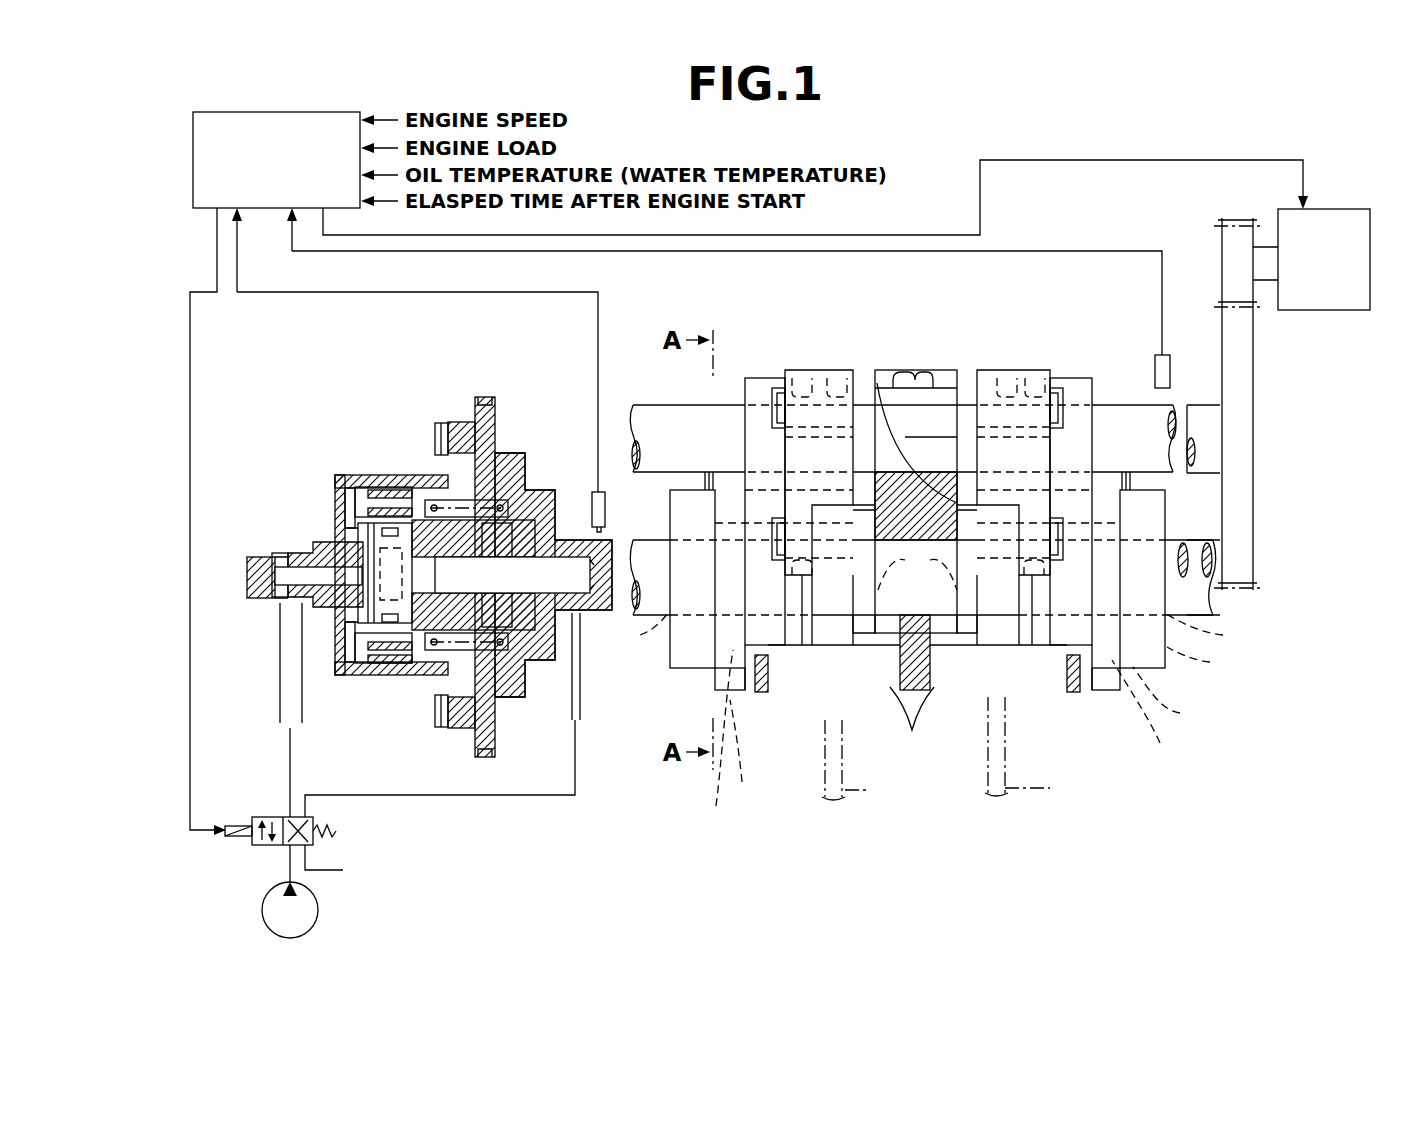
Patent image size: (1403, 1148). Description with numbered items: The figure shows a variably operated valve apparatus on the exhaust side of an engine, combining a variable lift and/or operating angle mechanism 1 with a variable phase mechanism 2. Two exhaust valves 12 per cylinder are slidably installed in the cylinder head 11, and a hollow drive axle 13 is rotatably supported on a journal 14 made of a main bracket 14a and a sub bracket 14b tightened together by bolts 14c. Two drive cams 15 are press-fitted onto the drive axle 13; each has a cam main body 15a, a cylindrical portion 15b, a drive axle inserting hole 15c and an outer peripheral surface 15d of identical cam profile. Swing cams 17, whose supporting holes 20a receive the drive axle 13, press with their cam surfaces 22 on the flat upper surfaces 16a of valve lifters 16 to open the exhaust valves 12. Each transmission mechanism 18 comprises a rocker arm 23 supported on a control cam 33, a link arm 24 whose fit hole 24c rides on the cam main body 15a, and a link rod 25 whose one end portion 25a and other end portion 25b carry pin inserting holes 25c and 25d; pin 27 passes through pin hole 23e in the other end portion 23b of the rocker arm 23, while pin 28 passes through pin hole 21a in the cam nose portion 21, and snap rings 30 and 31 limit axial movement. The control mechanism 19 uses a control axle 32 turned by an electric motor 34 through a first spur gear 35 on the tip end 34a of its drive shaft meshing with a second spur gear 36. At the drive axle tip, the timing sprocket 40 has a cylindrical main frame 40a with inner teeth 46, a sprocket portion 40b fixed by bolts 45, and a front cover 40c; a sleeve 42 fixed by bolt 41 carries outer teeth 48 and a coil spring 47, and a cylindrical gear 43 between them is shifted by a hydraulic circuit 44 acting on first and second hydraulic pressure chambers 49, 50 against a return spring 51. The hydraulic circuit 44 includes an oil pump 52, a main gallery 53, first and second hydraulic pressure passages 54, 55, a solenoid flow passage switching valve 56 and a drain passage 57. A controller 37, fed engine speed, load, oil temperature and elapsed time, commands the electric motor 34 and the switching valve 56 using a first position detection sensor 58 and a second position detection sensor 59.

The variable lift and/or operating angle mechanism 1 is at (1096, 772).
The variable phase mechanism 2 is at (414, 625).
The cylinder head 11 is at (758, 693).
The exhaust valve 12 is at (868, 790).
The drive axle 13 is at (603, 525).
The journal 14 is at (939, 362).
The main bracket 14a is at (933, 450).
The sub bracket 14b is at (880, 390).
The bolt 14c is at (918, 372).
The drive cam 15 is at (660, 672).
The cam main body 15a is at (968, 741).
The cylindrical portion 15b is at (667, 645).
The drive axle inserting hole 15c is at (929, 630).
The outer peripheral surface 15d is at (951, 735).
The valve lifter 16 is at (923, 650).
The flat upper surface 16a is at (745, 608).
The swing cam 17 is at (864, 643).
The transmission mechanism 18 is at (814, 362).
The control mechanism 19 is at (680, 392).
The supporting hole 20a is at (803, 610).
The cam nose portion 21 is at (838, 585).
The pin hole 21a is at (917, 571).
The cam surface 22 is at (856, 635).
The rocker arm 23 is at (810, 370).
The other end portion 23b is at (838, 372).
The pin hole 23e is at (832, 372).
The link arm 24 is at (715, 675).
The fit hole 24c is at (717, 668).
The link rod 25 is at (785, 450).
The one end portion 25a is at (787, 372).
The other end portion 25b is at (806, 590).
The pin inserting hole 25c is at (793, 377).
The pin inserting hole 25d is at (800, 573).
The pin 27 is at (776, 395).
The pin 28 is at (772, 528).
The snap ring 30 is at (772, 412).
The snap ring 31 is at (772, 548).
The control axle 32 is at (647, 413).
The control cam 33 is at (845, 455).
The electric motor 34 is at (1322, 209).
The tip end of drive shaft 34a is at (1262, 275).
The first spur gear 35 is at (1222, 233).
The second spur gear 36 is at (1255, 443).
The controller 37 is at (193, 158).
The timing sprocket 40 is at (421, 460).
The cylindrical main frame 40a is at (385, 485).
The sprocket portion 40b is at (518, 457).
The front cover 40c is at (332, 478).
The bolt 41 is at (358, 623).
The sleeve 42 is at (418, 627).
The cylindrical gear 43 is at (372, 653).
The hydraulic circuit 44 is at (546, 808).
The bolt 45 is at (438, 423).
The inner teeth 46 is at (365, 490).
The coil spring 47 is at (342, 533).
The outer teeth 48 is at (360, 650).
The first hydraulic pressure chamber 49 is at (343, 494).
The second hydraulic pressure chamber 50 is at (492, 660).
The return spring 51 is at (432, 653).
The oil pump 52 is at (318, 910).
The main gallery 53 is at (288, 873).
The first hydraulic pressure passage 54 is at (290, 745).
The second hydraulic pressure passage 55 is at (445, 796).
The flow passage switching valve 56 is at (262, 817).
The drain passage 57 is at (315, 858).
The first position detection sensor 58 is at (1166, 363).
The second position detection sensor 59 is at (592, 505).